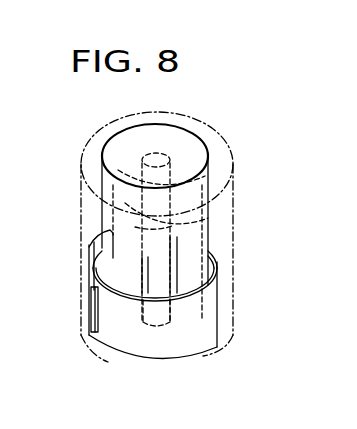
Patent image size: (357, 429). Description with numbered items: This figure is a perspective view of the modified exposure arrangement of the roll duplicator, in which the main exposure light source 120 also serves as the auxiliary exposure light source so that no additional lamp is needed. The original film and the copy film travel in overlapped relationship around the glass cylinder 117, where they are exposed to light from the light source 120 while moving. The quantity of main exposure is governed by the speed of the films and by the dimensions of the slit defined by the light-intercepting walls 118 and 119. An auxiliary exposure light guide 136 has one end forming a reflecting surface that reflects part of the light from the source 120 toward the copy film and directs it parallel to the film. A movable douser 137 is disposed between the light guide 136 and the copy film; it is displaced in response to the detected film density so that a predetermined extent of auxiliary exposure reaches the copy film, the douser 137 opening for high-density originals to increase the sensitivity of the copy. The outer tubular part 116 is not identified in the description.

The tubular housing 116 is at (196, 118).
The glass cylinder 117 is at (150, 338).
The light-intercepting wall 118 is at (210, 178).
The light-intercepting wall 119 is at (163, 284).
The main exposure light source 120 is at (170, 156).
The auxiliary exposure light guide 136 is at (88, 249).
The douser 137 is at (92, 317).